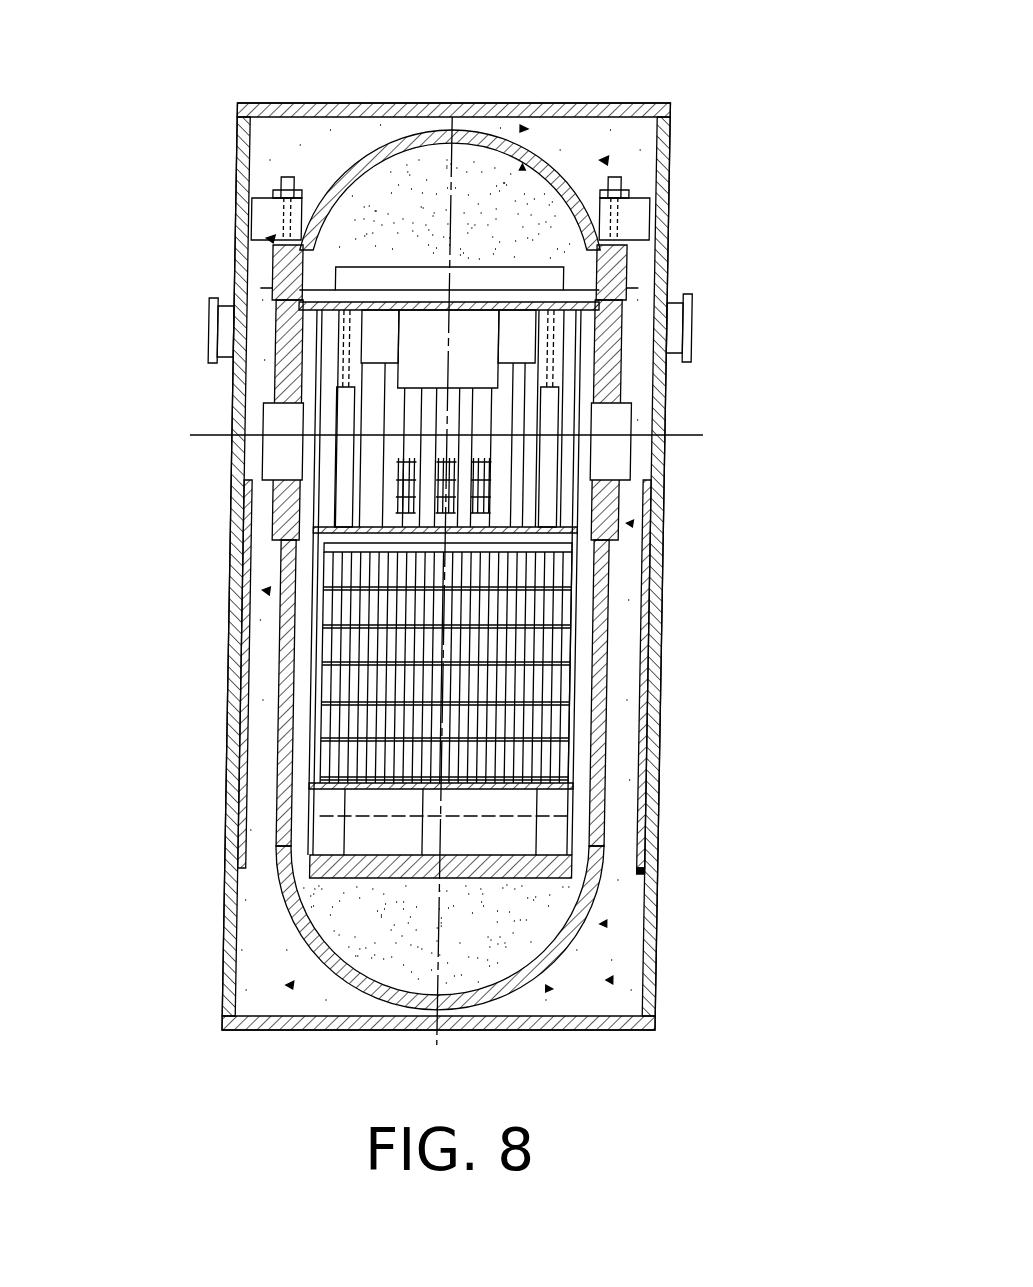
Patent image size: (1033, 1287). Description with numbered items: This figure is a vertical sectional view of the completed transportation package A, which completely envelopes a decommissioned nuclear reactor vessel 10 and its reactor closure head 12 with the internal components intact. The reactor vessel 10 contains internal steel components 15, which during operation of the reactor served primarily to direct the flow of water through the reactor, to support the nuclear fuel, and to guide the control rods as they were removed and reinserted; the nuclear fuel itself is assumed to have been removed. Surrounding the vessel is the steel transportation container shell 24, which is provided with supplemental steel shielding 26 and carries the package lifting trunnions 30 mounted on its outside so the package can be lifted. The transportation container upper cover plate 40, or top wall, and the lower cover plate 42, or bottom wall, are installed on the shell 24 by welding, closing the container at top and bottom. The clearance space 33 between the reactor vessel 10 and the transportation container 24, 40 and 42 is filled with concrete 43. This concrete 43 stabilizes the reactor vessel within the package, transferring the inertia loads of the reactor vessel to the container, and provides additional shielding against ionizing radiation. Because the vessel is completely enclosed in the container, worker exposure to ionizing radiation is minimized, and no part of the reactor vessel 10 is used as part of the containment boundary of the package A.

The transportation package A is at (237, 103).
The reactor vessel 10 is at (298, 932).
The reactor closure head 12 is at (635, 257).
The internal steel components 15 is at (340, 683).
The transportation container shell 24 is at (665, 612).
The supplemental steel shielding 26 is at (648, 912).
The package lifting trunnions 30 is at (208, 330).
The clearance space 33 is at (627, 530).
The upper cover plate 40 is at (427, 100).
The lower cover plate 42 is at (520, 1030).
The concrete 43 is at (600, 148).